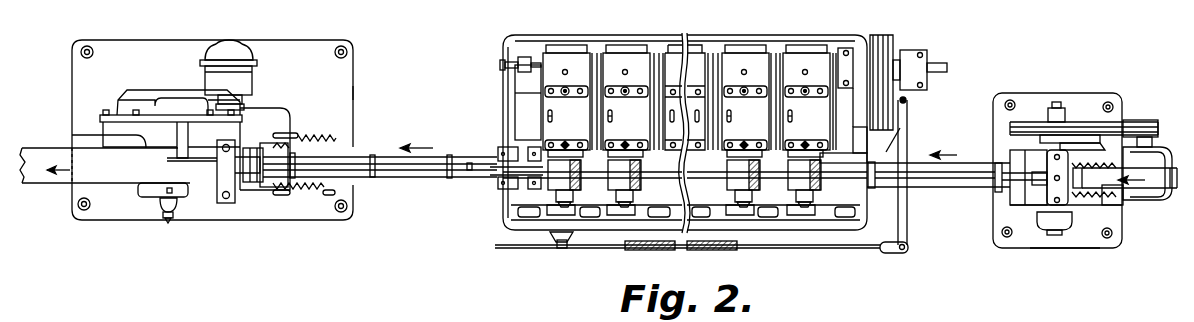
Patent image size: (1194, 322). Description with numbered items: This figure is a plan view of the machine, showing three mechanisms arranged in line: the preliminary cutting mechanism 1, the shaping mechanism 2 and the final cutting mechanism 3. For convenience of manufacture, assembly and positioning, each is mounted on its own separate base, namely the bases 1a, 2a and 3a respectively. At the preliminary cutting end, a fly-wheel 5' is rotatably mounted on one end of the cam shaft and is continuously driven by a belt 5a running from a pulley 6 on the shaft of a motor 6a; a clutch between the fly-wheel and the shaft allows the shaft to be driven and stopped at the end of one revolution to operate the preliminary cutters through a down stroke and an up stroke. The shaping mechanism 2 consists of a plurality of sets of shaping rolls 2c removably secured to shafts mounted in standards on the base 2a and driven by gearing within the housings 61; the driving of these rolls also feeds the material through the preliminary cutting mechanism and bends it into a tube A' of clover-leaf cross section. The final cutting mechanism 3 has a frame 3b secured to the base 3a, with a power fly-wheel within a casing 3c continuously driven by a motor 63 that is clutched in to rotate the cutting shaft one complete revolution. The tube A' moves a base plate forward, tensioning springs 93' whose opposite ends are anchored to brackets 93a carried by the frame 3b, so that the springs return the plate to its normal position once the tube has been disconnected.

The preliminary cutting mechanism 1 is at (1051, 170).
The base 1a is at (1037, 245).
The shaping mechanism 2 is at (899, 175).
The base 2a is at (660, 41).
The shaping rolls 2c is at (563, 180).
The final cutting mechanism 3 is at (357, 72).
The base 3a is at (353, 97).
The frame 3b is at (287, 113).
The casing 3c is at (72, 140).
The fly-wheel 5' is at (1084, 103).
The belt 5a is at (1085, 130).
The pulley 6 is at (1142, 122).
The motor 6a is at (1160, 198).
The housings 61 is at (581, 55).
The motor 63 is at (250, 82).
The brackets 93a is at (295, 135).
The springs 93' is at (339, 217).
The tube A' is at (370, 180).